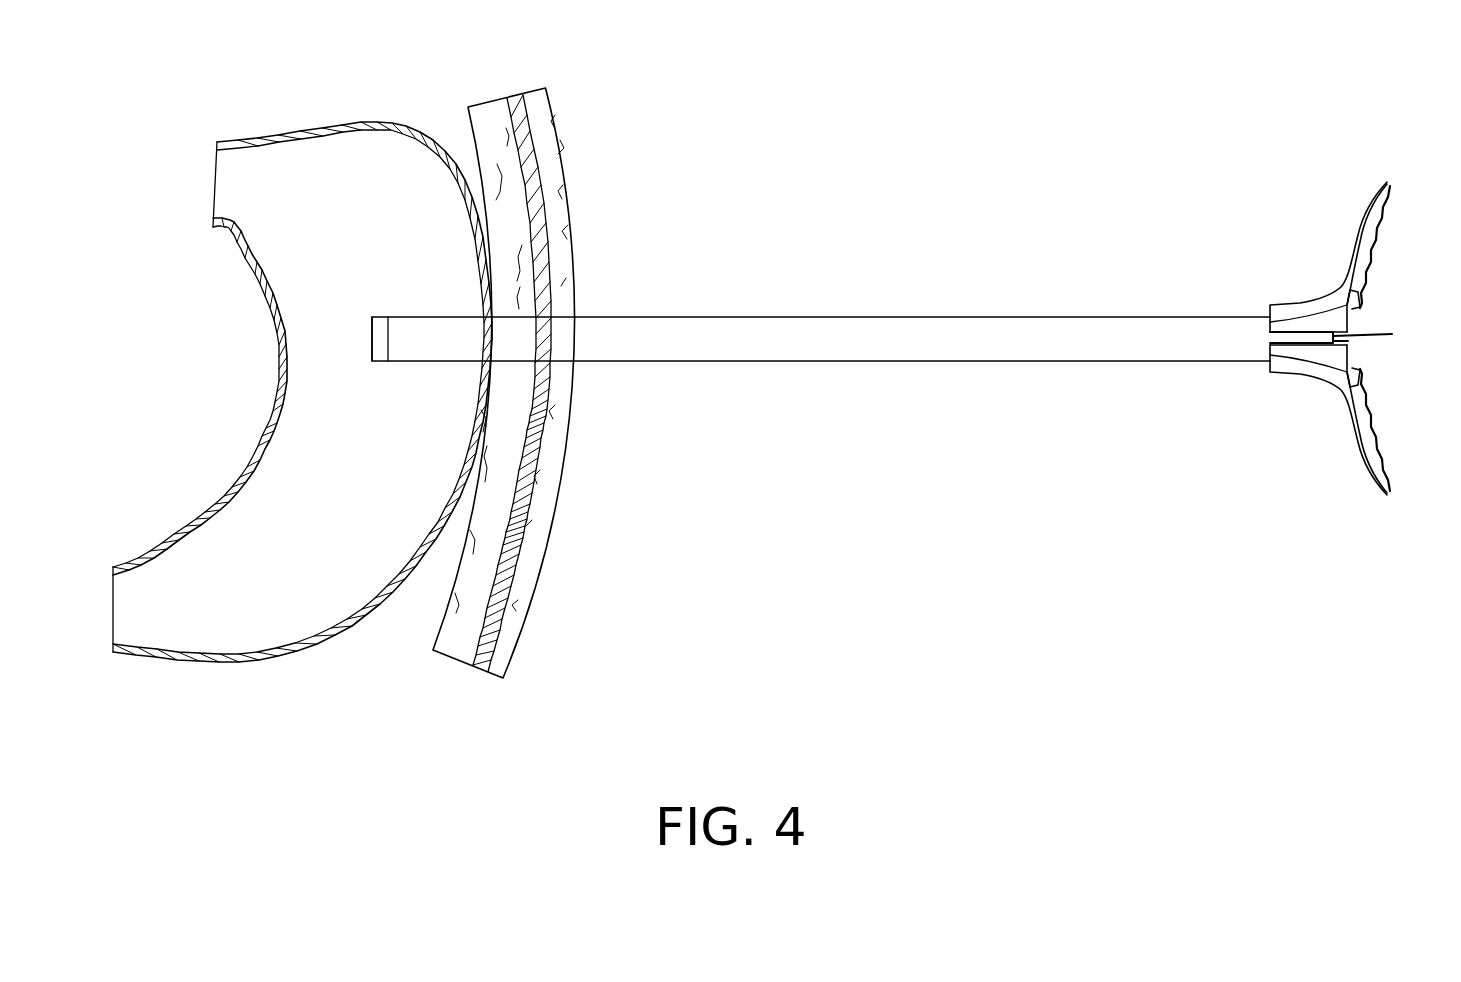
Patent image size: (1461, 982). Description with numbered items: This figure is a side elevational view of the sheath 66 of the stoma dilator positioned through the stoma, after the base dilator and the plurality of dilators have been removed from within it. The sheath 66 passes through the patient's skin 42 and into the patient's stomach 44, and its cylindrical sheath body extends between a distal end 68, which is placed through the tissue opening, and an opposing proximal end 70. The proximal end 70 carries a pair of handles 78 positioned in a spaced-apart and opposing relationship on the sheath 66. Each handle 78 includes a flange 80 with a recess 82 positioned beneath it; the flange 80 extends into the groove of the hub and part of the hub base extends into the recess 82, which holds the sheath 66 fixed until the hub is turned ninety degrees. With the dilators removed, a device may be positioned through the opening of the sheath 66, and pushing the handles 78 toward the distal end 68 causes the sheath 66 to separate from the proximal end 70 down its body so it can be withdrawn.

The patient's skin 42 is at (568, 206).
The patient's stomach 44 is at (388, 118).
The sheath 66 is at (930, 317).
The distal end 68 is at (370, 330).
The proximal end 70 is at (1353, 323).
The handle 78 is at (1358, 251).
The flange 80 is at (1363, 310).
The recess 82 is at (1367, 272).